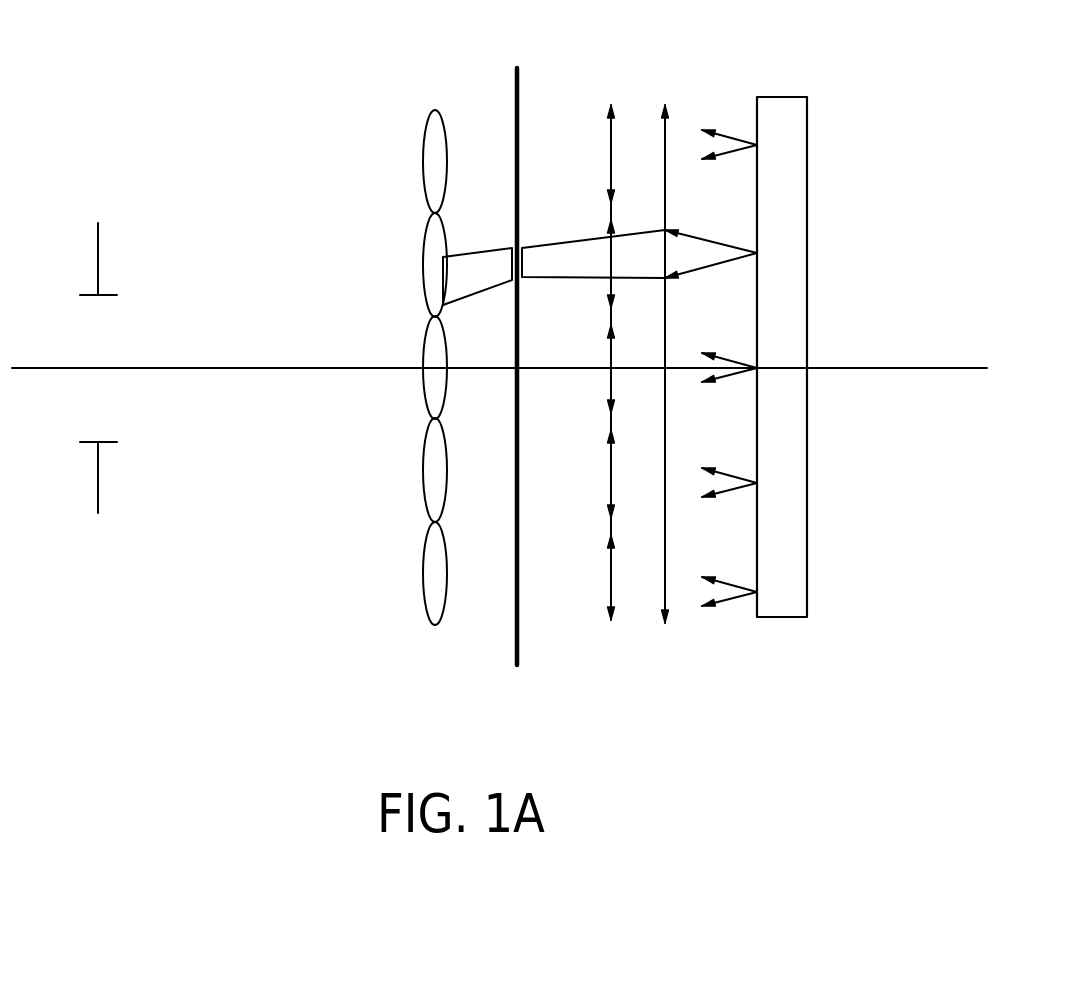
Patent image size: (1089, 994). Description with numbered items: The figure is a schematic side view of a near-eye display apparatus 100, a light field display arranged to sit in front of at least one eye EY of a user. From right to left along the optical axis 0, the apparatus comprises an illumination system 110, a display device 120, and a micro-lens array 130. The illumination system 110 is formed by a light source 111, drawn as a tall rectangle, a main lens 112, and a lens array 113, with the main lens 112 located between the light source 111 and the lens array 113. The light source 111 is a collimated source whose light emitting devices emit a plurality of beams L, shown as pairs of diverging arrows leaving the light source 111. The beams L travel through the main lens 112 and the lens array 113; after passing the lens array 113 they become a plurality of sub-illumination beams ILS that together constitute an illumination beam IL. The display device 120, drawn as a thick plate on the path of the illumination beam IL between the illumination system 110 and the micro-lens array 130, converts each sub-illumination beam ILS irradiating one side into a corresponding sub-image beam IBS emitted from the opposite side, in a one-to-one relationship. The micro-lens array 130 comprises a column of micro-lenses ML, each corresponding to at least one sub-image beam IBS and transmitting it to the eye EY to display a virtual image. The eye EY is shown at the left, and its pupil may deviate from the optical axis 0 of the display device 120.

The near-eye display apparatus 100 is at (520, 399).
The illumination system 110 is at (708, 431).
The light source 111 is at (783, 611).
The main lens 112 is at (665, 624).
The lens array 113 is at (612, 622).
The display device 120 is at (520, 85).
The micro-lens array 130 is at (405, 329).
The micro-lens ML is at (427, 163).
The sub-image beam IBS is at (497, 282).
The sub-illumination beam ILS is at (639, 208).
The illumination beam IL is at (562, 235).
The beam L is at (713, 240).
The eye EY is at (98, 258).
The optical axis 0 is at (510, 369).